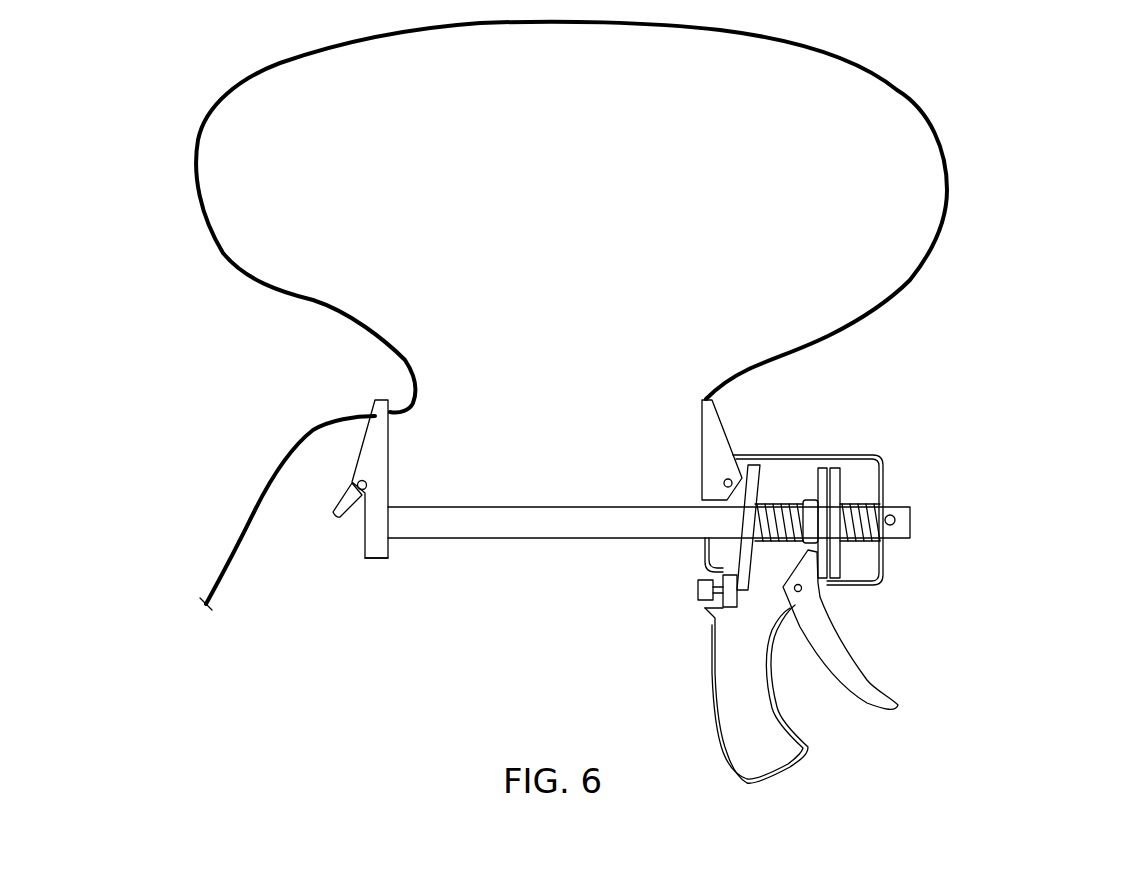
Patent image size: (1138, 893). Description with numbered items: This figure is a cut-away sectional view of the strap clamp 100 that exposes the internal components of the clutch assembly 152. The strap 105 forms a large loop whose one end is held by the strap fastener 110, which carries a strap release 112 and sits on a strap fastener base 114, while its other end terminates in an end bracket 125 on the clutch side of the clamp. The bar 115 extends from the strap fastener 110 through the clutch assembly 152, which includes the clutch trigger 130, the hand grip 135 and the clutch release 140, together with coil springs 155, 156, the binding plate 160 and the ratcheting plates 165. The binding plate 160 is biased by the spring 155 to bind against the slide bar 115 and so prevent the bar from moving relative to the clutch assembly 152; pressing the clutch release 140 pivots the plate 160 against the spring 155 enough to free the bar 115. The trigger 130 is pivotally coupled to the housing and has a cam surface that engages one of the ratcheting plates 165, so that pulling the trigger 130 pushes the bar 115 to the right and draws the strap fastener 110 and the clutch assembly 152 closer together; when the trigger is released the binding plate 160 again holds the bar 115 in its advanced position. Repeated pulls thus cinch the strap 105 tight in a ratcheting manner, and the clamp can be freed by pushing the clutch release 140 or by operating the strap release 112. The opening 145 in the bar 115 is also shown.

The strap clamp 100 is at (974, 126).
The strap 105 is at (197, 187).
The strap fastener 110 is at (388, 452).
The strap release 112 is at (336, 514).
The strap fastener base 114 is at (374, 560).
The bar 115 is at (505, 507).
The end bracket 125 is at (700, 458).
The clutch trigger 130 is at (833, 617).
The hand grip 135 is at (716, 707).
The clutch release 140 is at (697, 592).
The hole 145 is at (892, 514).
The clutch assembly 152 is at (948, 446).
The coil spring 155 is at (780, 503).
The coil spring 156 is at (862, 544).
The binding plate 160 is at (765, 463).
The ratcheting plates 165 is at (843, 478).